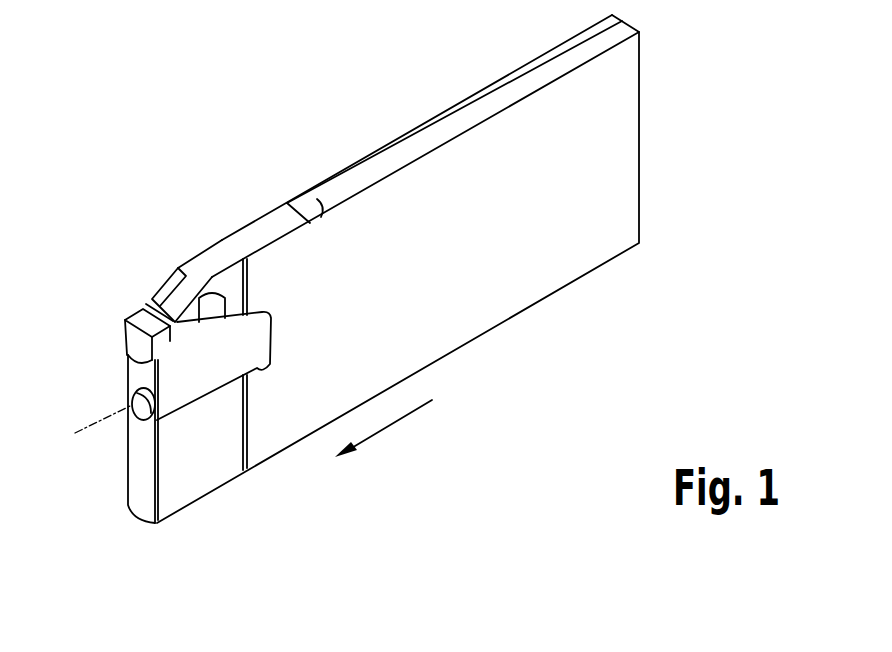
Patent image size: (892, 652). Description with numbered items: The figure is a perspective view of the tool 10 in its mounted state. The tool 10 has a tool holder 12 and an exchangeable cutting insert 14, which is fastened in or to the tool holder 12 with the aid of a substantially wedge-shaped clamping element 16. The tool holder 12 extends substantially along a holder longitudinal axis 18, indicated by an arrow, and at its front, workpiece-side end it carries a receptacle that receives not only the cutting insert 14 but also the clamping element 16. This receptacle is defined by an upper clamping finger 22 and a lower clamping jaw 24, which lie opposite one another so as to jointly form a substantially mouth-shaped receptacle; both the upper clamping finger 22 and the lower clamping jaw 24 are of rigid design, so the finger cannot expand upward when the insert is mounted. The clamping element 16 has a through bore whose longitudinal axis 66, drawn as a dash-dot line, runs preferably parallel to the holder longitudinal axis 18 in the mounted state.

The tool 10 is at (126, 107).
The tool holder 12 is at (448, 333).
The cutting insert 14 is at (124, 333).
The clamping element 16 is at (196, 383).
The holder longitudinal axis 18 is at (392, 422).
The upper clamping finger 22 is at (206, 290).
The lower clamping jaw 24 is at (143, 465).
The longitudinal axis of the bore 66 is at (77, 432).